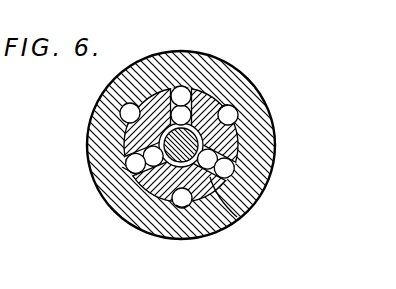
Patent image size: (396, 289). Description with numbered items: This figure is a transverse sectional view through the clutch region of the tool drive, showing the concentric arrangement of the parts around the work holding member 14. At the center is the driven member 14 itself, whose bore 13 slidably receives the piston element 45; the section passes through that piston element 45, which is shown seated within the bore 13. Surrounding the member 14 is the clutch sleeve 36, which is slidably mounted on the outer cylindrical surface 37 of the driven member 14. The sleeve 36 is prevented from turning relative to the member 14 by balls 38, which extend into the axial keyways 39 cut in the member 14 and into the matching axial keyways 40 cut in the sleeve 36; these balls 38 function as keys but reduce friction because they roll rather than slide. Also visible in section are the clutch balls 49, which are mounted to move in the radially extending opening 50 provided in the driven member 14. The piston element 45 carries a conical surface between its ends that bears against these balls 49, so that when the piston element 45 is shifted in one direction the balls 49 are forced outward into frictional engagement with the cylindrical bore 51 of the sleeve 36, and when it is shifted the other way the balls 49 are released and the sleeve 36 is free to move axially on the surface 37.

The bore 13 is at (124, 139).
The work holding member 14 is at (163, 92).
The clutch sleeve 36 is at (227, 78).
The outer cylindrical surface 37 is at (143, 110).
The balls 38 is at (223, 111).
The axial keyways 39 is at (118, 90).
The axial keyways 40 is at (128, 112).
The piston element 45 is at (210, 100).
The balls 49 is at (193, 90).
The radially extending opening 50 is at (137, 175).
The cylindrical bore 51 is at (227, 197).